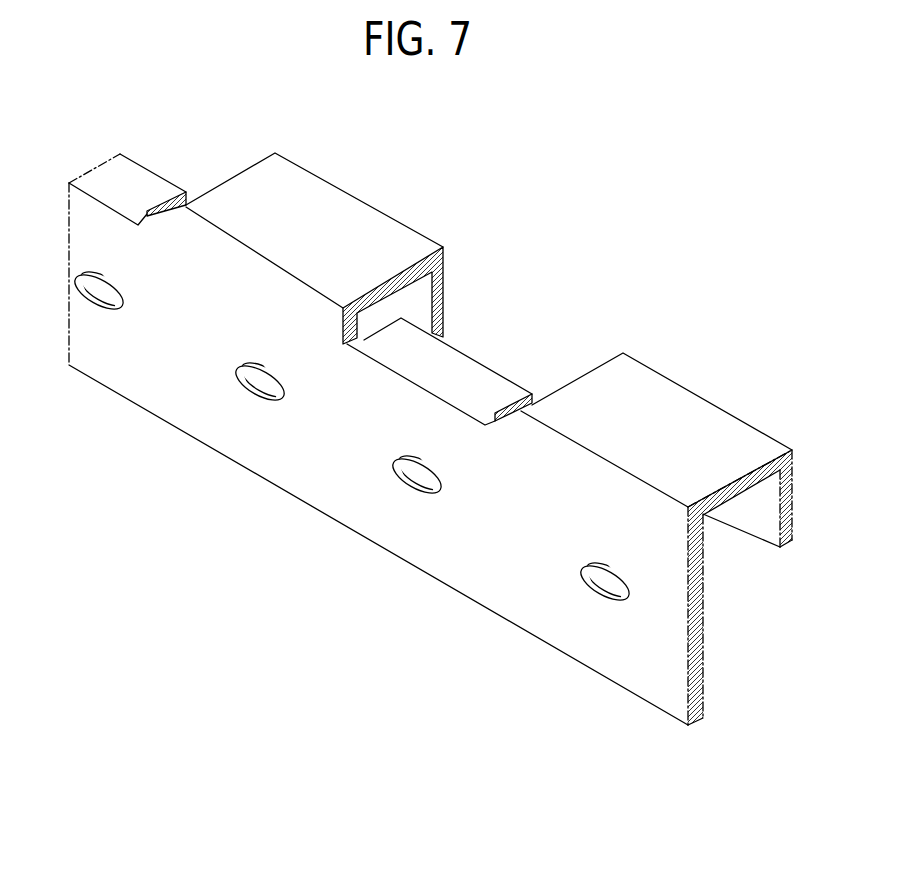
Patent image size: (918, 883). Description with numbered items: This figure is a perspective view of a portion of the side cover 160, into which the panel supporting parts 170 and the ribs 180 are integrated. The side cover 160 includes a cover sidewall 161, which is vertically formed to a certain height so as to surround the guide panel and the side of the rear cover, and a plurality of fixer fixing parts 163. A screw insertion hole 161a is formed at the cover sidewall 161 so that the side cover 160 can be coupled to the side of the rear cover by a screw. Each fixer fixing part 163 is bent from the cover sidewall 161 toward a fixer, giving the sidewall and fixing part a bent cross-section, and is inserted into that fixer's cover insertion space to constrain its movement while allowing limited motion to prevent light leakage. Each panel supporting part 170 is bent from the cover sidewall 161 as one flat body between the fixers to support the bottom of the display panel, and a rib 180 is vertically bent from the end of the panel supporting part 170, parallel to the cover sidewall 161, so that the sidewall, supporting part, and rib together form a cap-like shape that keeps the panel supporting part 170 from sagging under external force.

The side cover 160 is at (430, 728).
The cover sidewall 161 is at (447, 535).
The screw insertion hole 161a is at (408, 485).
The fixer fixing part 163 is at (417, 371).
The panel supporting part 170 is at (615, 418).
The rib 180 is at (767, 518).